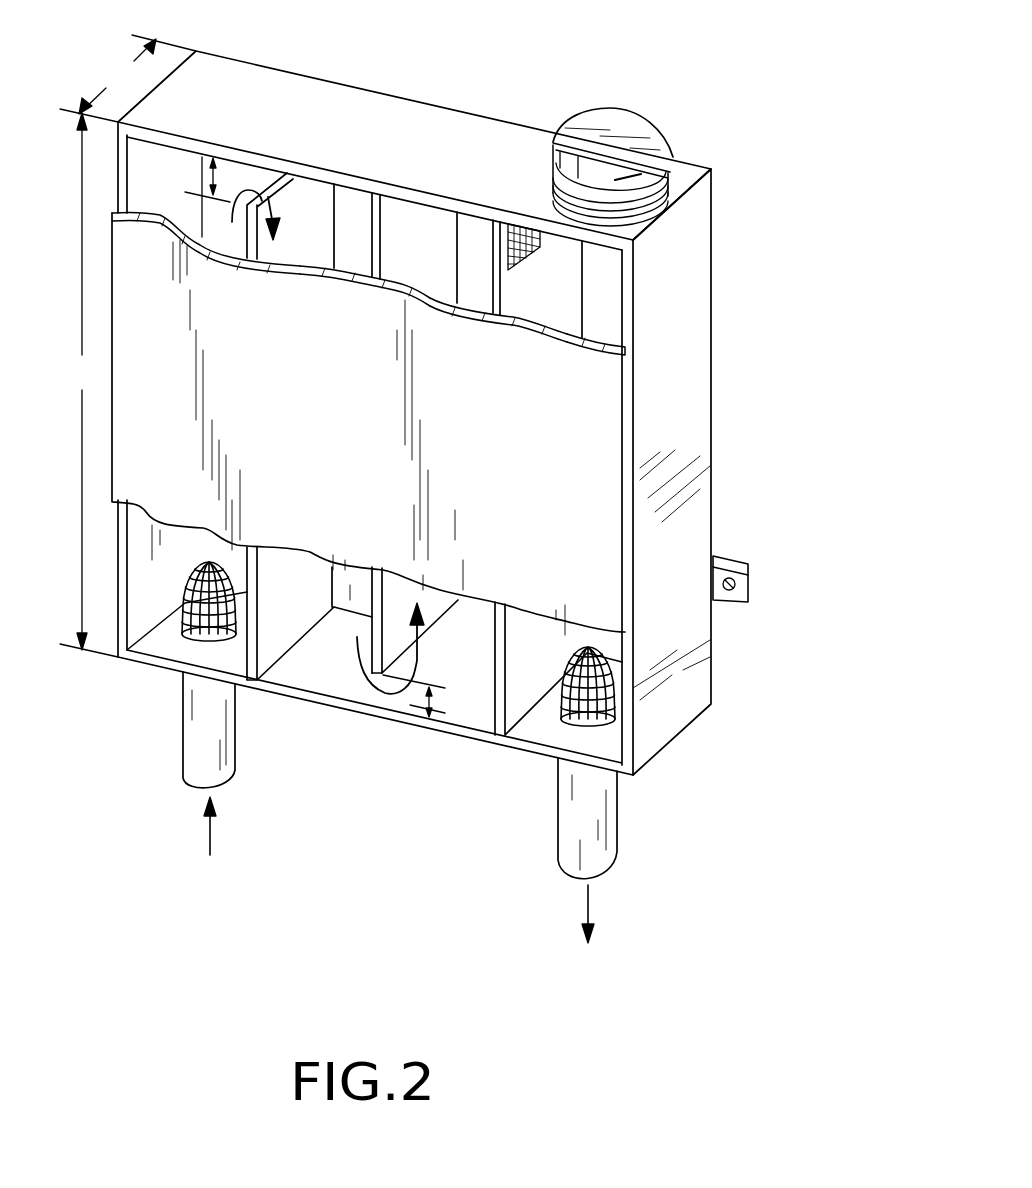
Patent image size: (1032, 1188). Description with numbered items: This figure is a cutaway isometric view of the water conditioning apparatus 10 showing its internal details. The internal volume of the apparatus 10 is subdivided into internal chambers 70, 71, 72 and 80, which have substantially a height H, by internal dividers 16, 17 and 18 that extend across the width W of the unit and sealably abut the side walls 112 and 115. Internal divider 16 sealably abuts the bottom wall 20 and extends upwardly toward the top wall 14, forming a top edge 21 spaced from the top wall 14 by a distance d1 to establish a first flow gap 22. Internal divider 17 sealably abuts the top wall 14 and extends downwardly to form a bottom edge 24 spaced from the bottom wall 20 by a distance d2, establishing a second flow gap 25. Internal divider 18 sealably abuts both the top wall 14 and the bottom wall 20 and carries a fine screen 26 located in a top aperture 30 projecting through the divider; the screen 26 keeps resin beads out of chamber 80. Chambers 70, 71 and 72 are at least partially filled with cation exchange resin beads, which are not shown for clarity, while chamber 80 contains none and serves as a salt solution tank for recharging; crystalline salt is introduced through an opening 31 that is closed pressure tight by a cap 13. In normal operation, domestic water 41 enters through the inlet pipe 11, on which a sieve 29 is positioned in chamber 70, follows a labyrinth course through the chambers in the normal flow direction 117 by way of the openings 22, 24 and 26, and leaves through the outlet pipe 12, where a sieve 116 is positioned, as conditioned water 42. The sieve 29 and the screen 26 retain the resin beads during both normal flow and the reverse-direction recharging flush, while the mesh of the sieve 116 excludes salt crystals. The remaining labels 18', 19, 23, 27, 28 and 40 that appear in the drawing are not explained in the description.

The water conditioning apparatus 10 is at (806, 124).
The inlet pipe 11 is at (182, 740).
The outlet pipe 12 is at (614, 814).
The cap 13 is at (652, 126).
The top wall 14 is at (462, 138).
The internal divider 16 is at (291, 238).
The internal divider 17 is at (417, 259).
The internal divider 18 is at (545, 282).
The lower chamber 18' is at (548, 642).
The lower baffle 19 is at (272, 645).
The bottom wall 20 is at (262, 670).
The top edge 21 is at (268, 197).
The first flow gap 22 is at (251, 192).
The second upper baffle 23 is at (392, 220).
The bottom edge 24 is at (372, 673).
The second flow gap 25 is at (493, 645).
The fine screen 26 is at (584, 252).
The third upper baffle 27 is at (523, 227).
The screen 28 is at (485, 238).
The sieve 29 is at (197, 572).
The top aperture 30 is at (510, 300).
The opening 31 is at (672, 173).
The mounting bracket 40 is at (752, 580).
The domestic water 41 is at (210, 846).
The conditioned water 42 is at (588, 935).
The internal chamber 70 is at (227, 240).
The internal chamber 71 is at (350, 255).
The internal chamber 72 is at (470, 307).
The internal chamber 80 is at (607, 320).
The side wall 112 is at (688, 408).
The side wall 115 is at (605, 544).
The sieve 116 is at (606, 661).
The normal flow direction 117 is at (243, 193).
The width W is at (128, 78).
The height H is at (89, 385).
The distance d1 is at (202, 175).
The distance d2 is at (434, 697).